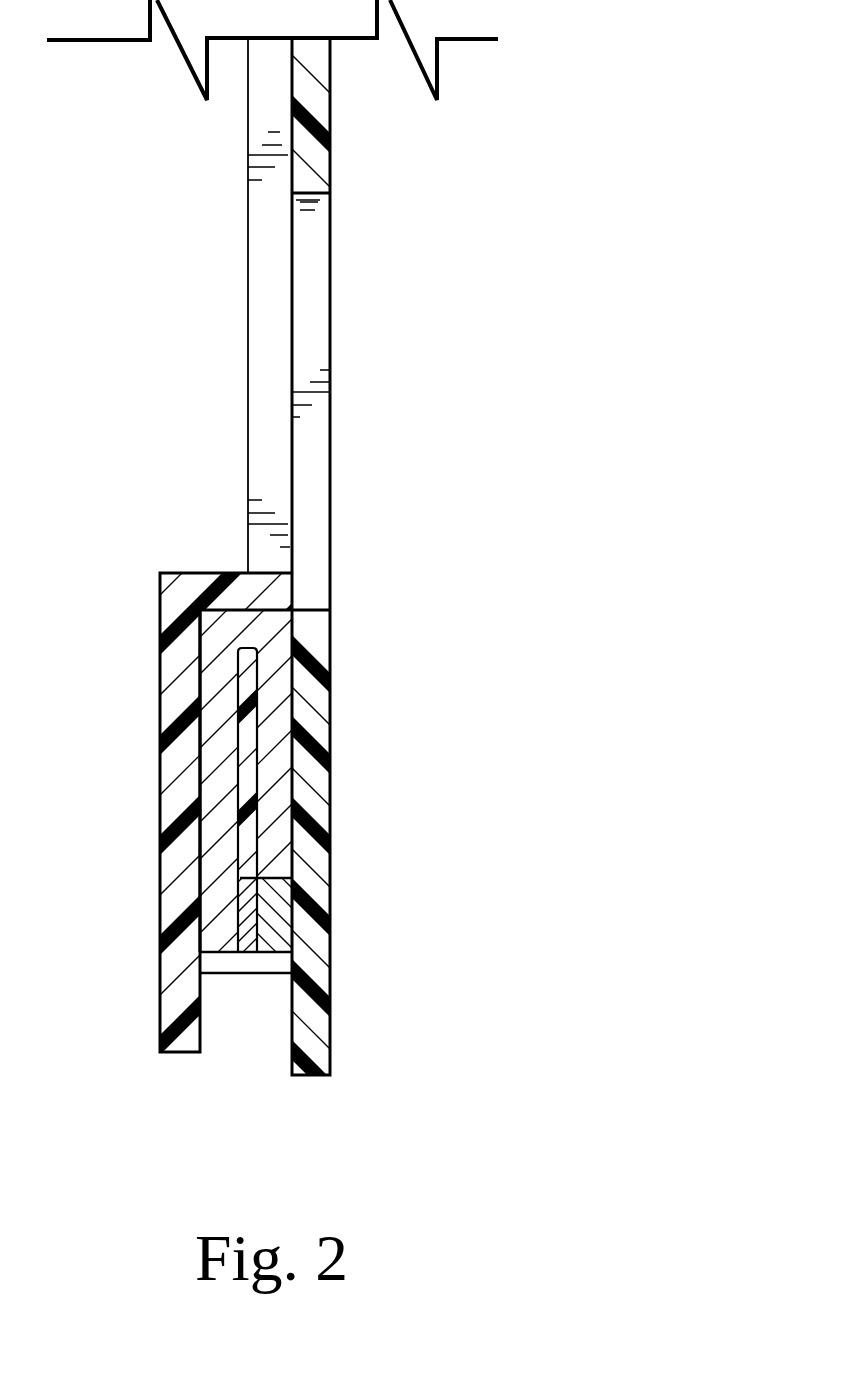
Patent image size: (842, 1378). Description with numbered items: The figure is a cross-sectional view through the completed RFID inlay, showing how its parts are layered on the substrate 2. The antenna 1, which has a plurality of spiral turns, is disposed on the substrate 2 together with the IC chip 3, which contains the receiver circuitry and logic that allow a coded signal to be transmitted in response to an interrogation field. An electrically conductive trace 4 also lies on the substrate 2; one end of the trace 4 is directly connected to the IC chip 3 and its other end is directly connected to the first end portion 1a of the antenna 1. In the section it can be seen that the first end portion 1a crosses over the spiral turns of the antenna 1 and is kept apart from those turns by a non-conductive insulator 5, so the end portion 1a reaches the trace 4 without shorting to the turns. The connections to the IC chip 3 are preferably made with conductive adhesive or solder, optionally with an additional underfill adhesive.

The antenna 1 is at (263, 287).
The first end portion 1a is at (218, 747).
The substrate 2 is at (317, 160).
The IC chip 3 is at (225, 968).
The electrically conductive trace 4 is at (268, 917).
The non-conductive insulator 5 is at (237, 668).